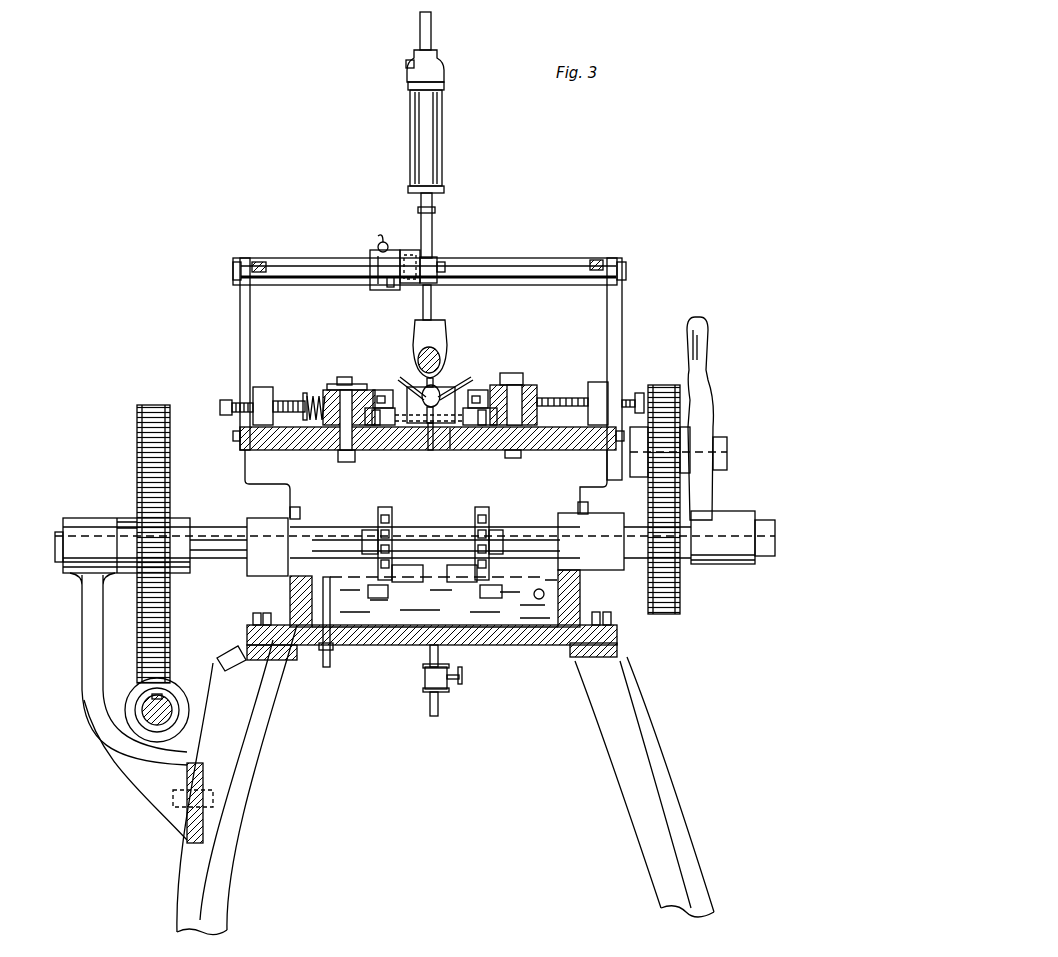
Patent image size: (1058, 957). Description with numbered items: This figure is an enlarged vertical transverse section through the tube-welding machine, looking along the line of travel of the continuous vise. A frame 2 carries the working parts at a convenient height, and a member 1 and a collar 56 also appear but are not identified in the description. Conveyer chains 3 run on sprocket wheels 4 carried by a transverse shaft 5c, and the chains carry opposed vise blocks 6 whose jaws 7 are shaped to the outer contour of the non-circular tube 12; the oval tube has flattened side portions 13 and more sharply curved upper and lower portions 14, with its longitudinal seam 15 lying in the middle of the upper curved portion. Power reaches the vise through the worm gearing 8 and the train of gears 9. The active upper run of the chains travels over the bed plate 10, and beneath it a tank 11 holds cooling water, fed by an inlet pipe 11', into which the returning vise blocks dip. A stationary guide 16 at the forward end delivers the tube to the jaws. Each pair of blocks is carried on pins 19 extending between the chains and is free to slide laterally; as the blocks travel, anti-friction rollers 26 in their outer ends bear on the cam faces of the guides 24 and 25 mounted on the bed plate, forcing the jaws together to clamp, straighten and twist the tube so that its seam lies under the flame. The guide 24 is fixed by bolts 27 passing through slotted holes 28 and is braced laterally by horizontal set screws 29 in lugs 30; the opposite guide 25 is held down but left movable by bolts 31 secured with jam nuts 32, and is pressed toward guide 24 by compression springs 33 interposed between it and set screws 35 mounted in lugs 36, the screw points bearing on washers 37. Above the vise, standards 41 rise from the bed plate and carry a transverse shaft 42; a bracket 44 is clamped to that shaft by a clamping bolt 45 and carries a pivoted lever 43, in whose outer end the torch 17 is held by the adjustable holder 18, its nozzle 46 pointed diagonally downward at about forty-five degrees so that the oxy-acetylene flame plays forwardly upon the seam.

The leg 1 is at (668, 768).
The frame 2 is at (620, 644).
The conveyer chain 3 is at (372, 450).
The sprocket wheel 4 is at (432, 643).
The transverse shaft 5c is at (588, 492).
The vise block 6 is at (375, 598).
The jaw 7 is at (410, 582).
The worm gearing 8 is at (160, 708).
The train of gears 9 is at (660, 510).
The bed plate 10 is at (252, 464).
The tank 11 is at (472, 597).
The inlet pipe 11' is at (529, 633).
The tube 12 is at (441, 394).
The flattened side portion 13 is at (433, 382).
The more sharply curved portion 14 is at (440, 348).
The longitudinal seam 15 is at (427, 383).
The stationary guide 16 is at (397, 402).
The torch 17 is at (421, 328).
The adjustable holder 18 is at (438, 265).
The pin 19 is at (450, 450).
The cam bar guide 24 is at (530, 450).
The cam bar guide 25 is at (302, 452).
The anti-friction roller 26 is at (378, 390).
The bolt 27 is at (515, 373).
The slotted hole 28 is at (358, 390).
The horizontal set screw 29 is at (556, 398).
The lug 30 is at (597, 382).
The bolt 31 is at (343, 377).
The jam nut 32 is at (350, 463).
The compression spring 33 is at (316, 394).
The set screw 35 is at (222, 400).
The lug 36 is at (262, 387).
The washer 37 is at (305, 395).
The standard 41 is at (250, 335).
The transverse shaft 42 is at (552, 262).
The lever 43 is at (378, 270).
The bracket 44 is at (410, 258).
The clamping bolt 45 is at (383, 242).
The nozzle 46 is at (441, 362).
The collar 56 is at (362, 544).